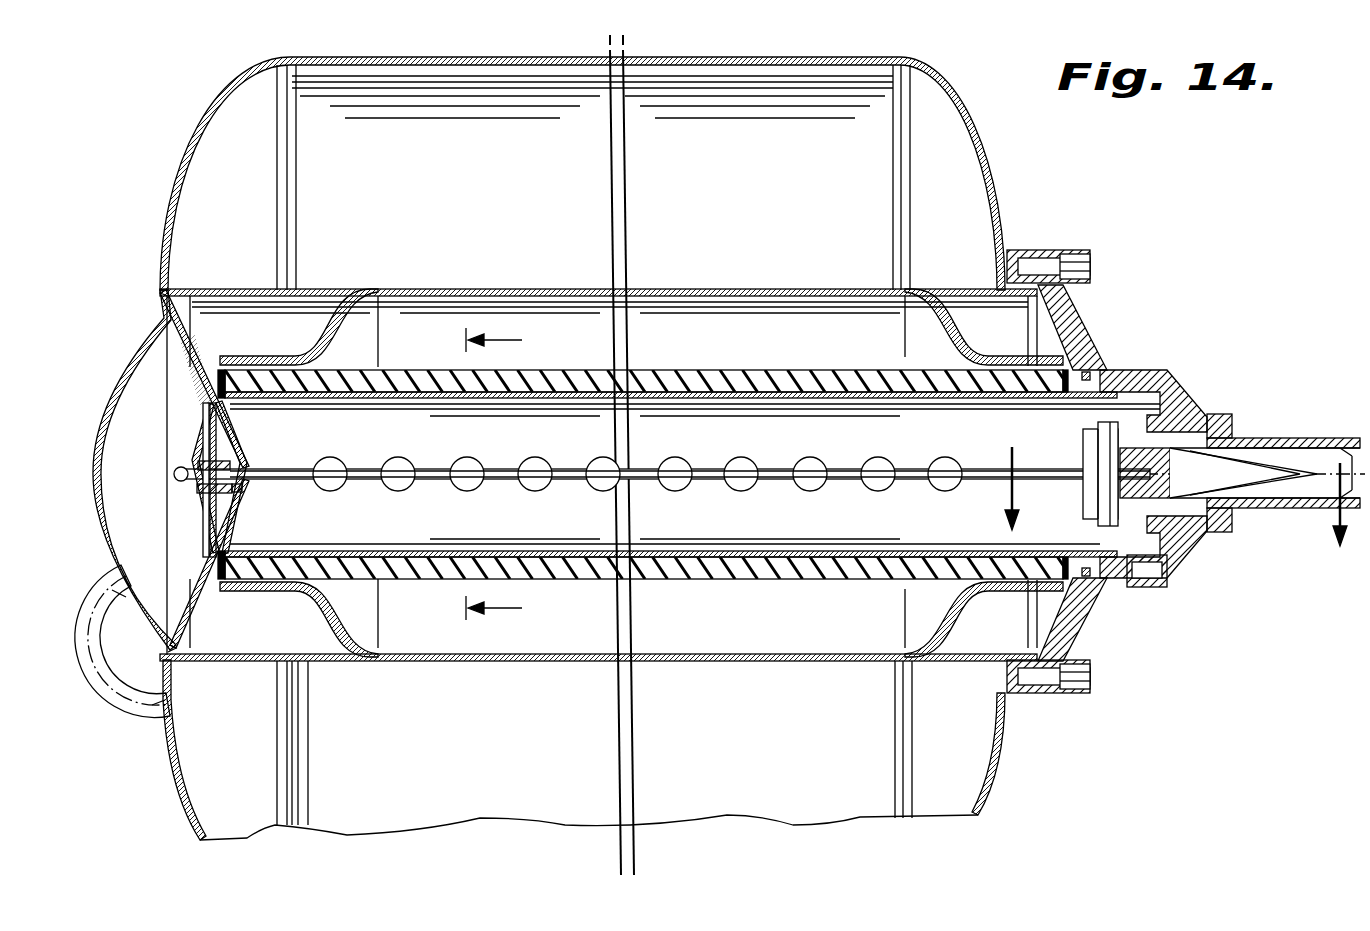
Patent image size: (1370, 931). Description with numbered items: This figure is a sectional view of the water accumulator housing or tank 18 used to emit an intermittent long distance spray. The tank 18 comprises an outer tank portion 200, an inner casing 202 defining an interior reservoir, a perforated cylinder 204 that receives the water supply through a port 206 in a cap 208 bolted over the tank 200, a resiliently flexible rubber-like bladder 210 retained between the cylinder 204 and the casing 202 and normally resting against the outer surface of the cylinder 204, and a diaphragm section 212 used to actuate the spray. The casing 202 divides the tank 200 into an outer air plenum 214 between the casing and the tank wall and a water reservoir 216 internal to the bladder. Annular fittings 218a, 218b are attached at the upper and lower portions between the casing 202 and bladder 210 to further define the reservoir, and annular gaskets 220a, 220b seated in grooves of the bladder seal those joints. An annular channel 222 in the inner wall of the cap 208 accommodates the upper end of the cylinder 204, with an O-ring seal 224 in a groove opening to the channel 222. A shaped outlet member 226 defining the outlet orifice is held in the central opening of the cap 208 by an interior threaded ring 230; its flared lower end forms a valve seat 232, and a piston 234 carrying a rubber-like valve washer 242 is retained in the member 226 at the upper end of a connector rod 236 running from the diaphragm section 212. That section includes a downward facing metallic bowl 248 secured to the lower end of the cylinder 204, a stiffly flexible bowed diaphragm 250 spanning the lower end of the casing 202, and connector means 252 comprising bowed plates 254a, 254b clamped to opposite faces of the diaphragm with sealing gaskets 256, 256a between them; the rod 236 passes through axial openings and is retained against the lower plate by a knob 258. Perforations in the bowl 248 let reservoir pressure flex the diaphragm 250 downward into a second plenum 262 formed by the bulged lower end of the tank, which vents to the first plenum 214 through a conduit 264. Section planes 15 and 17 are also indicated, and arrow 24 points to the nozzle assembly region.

The water accumulator housing or tank 18 is at (649, 448).
The outlet nozzle assembly 24 is at (1191, 465).
The outer tank portion 200 is at (995, 170).
The inner casing 202 is at (822, 662).
The perforated cylinder 204 is at (720, 558).
The port 206 is at (1140, 574).
The cap 208 is at (1060, 637).
The bladder 210 is at (590, 580).
The diaphragm section 212 is at (202, 406).
The outer air plenum 214 is at (592, 139).
The water reservoir 216 is at (695, 474).
The annular fitting 218a is at (968, 335).
The annular fitting 218b is at (340, 345).
The annular gasket 220a is at (1047, 586).
The annular gasket 220b is at (250, 368).
The annular channel 222 is at (1150, 374).
The O-ring seal 224 is at (1093, 362).
The shaped outlet member 226 is at (1316, 438).
The interior threaded ring 230 is at (1232, 524).
The valve seat 232 is at (1118, 520).
The piston 234 is at (1145, 479).
The connector rod 236 is at (712, 479).
The valve washer 242 is at (1112, 438).
The metallic bowl 248 is at (204, 602).
The bowed diaphragm 250 is at (214, 592).
The connector means 252 is at (192, 445).
The bowed plate 254a is at (236, 520).
The bowed plate 254b is at (200, 536).
The sealing gasket 256 is at (196, 503).
The sealing gasket 256a is at (228, 502).
The knob 258 is at (176, 472).
The second plenum 262 is at (176, 345).
The conduit 264 is at (152, 702).
The section line 15- 15 is at (1150, 515).
The section line 17- 17 is at (515, 478).